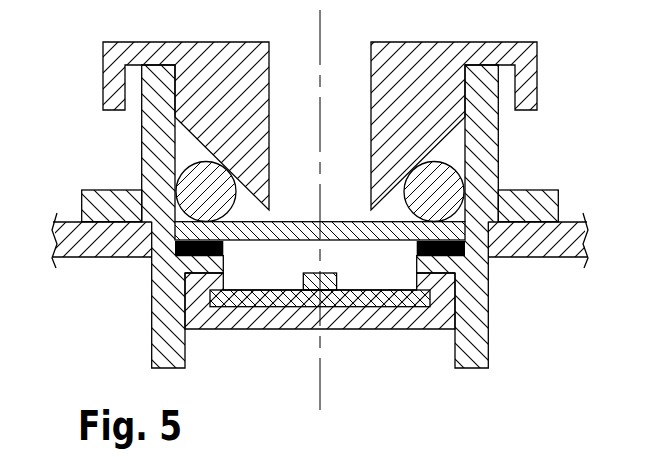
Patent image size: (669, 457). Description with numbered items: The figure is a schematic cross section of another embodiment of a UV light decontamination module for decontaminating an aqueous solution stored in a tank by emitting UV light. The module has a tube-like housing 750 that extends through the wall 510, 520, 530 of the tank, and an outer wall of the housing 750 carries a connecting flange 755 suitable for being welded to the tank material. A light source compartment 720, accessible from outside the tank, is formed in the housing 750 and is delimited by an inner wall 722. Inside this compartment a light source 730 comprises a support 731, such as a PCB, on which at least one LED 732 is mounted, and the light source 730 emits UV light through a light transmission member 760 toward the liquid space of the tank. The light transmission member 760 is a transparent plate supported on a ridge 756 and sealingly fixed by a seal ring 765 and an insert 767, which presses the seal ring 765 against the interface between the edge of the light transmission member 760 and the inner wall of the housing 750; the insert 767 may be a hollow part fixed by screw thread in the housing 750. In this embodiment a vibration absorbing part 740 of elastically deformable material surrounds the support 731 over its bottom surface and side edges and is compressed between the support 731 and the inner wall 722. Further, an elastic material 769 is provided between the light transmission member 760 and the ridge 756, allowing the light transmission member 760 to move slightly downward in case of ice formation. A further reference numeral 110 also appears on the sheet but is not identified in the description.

The substrate processing apparatus 110 is at (340, 230).
The wall 510 is at (305, 286).
The wall 520 is at (305, 286).
The wall 530 is at (85, 242).
The light source compartment 720 is at (262, 274).
The inner wall 722 is at (455, 343).
The light source 730 is at (321, 352).
The support 731 is at (387, 295).
The LED 732 is at (322, 284).
The vibration absorbing part 740 is at (302, 320).
The housing 750 is at (335, 248).
The connecting flange 755 is at (531, 208).
The ridge 756 is at (207, 266).
The light transmission member 760 is at (280, 222).
The seal ring 765 is at (443, 185).
The insert 767 is at (423, 83).
The elastic material 769 is at (467, 257).